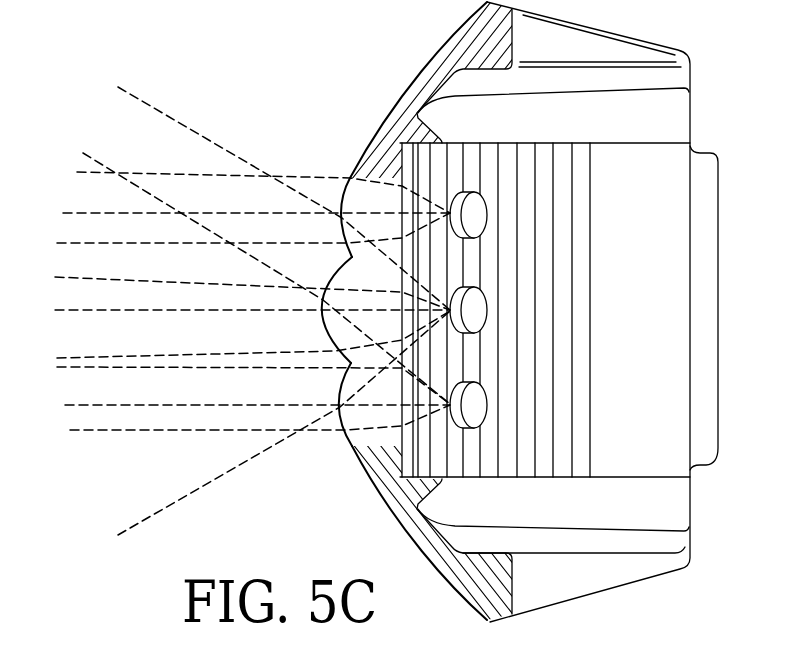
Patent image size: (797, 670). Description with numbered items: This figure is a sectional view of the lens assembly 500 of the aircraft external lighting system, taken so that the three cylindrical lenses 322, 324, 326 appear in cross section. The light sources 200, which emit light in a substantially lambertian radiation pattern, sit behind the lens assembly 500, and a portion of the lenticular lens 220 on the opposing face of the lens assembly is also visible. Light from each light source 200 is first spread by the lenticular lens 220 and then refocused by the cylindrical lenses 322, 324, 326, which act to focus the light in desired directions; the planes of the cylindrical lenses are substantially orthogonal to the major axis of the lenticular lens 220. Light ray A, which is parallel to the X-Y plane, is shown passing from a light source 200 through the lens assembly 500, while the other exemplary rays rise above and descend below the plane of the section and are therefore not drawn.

The lens assembly 500 is at (306, 103).
The lenticular lens 220 is at (380, 486).
The cylindrical lens 322 is at (340, 212).
The cylindrical lens 324 is at (324, 329).
The cylindrical lens 326 is at (340, 394).
The light source 200 is at (477, 217).
The light ray A is at (238, 311).